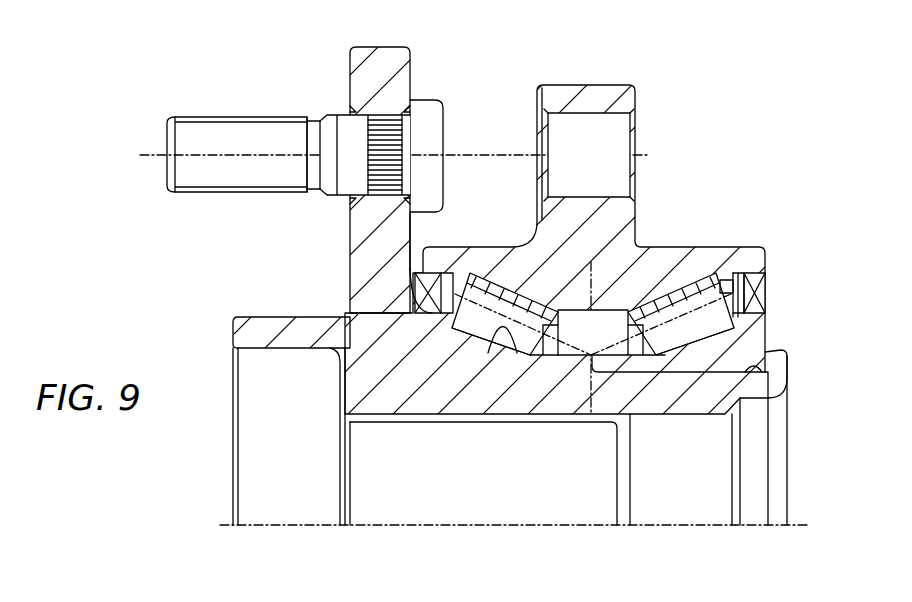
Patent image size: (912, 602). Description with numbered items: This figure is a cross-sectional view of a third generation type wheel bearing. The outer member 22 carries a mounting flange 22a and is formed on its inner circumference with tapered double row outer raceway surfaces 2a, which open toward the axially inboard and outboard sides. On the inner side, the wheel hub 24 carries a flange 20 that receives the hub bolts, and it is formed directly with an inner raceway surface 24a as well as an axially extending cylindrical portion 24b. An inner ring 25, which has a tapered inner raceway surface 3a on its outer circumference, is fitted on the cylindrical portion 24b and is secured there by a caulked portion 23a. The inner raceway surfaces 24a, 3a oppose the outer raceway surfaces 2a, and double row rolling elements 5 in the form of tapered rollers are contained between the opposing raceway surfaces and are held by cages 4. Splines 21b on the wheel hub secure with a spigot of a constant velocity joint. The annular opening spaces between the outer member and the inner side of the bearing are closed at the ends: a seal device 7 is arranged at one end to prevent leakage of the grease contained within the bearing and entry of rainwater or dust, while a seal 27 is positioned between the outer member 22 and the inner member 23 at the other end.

The flange 20 is at (377, 78).
The outer member 22 is at (701, 259).
The mounting flange 22a is at (598, 104).
The outer raceway surface 2a is at (488, 350).
The cage 4 is at (486, 282).
The seal 27 is at (412, 297).
The seal device 7 is at (766, 287).
The inner raceway surface 3a is at (719, 314).
The wheel hub 24 is at (347, 333).
The inner member 23 is at (322, 441).
The caulked portion 23a is at (784, 362).
The splines 21b is at (447, 420).
The inner raceway surface 24a is at (515, 356).
The inner ring 25 is at (765, 350).
The rolling elements 5 is at (672, 295).
The cylindrical portion 24b is at (759, 362).